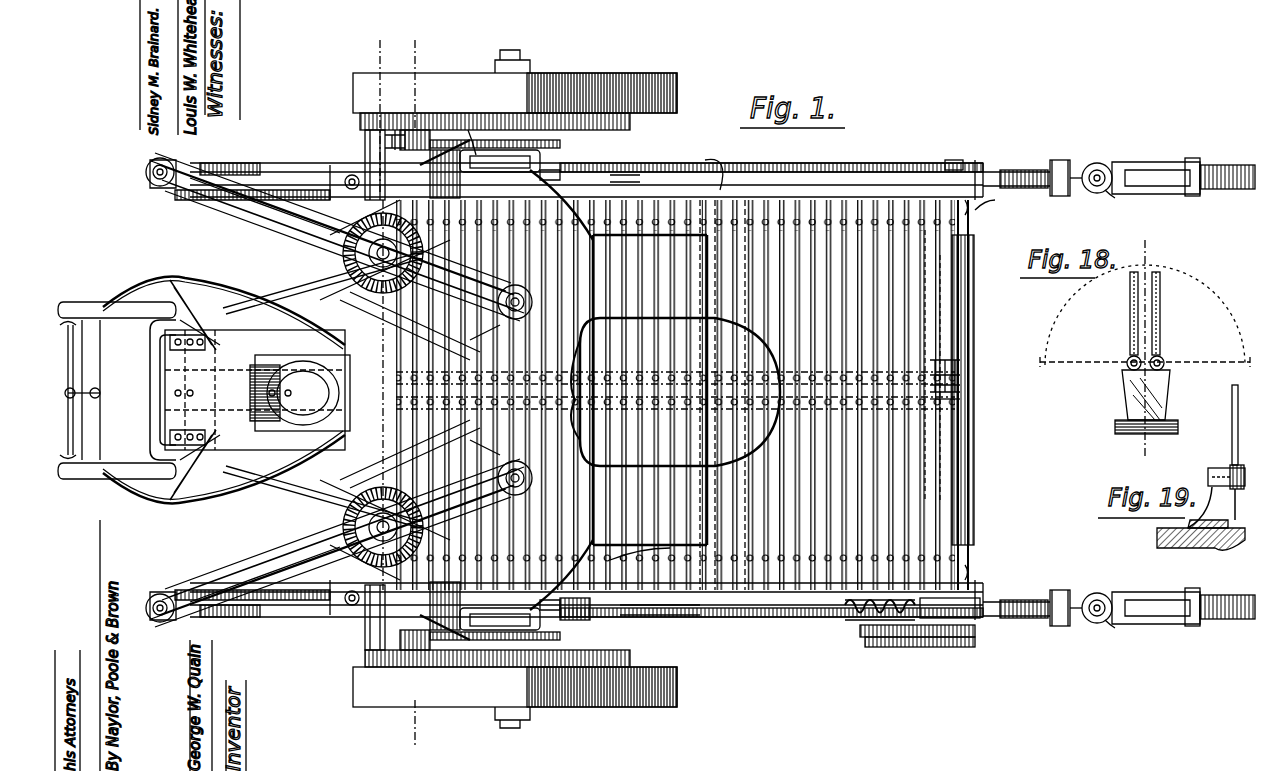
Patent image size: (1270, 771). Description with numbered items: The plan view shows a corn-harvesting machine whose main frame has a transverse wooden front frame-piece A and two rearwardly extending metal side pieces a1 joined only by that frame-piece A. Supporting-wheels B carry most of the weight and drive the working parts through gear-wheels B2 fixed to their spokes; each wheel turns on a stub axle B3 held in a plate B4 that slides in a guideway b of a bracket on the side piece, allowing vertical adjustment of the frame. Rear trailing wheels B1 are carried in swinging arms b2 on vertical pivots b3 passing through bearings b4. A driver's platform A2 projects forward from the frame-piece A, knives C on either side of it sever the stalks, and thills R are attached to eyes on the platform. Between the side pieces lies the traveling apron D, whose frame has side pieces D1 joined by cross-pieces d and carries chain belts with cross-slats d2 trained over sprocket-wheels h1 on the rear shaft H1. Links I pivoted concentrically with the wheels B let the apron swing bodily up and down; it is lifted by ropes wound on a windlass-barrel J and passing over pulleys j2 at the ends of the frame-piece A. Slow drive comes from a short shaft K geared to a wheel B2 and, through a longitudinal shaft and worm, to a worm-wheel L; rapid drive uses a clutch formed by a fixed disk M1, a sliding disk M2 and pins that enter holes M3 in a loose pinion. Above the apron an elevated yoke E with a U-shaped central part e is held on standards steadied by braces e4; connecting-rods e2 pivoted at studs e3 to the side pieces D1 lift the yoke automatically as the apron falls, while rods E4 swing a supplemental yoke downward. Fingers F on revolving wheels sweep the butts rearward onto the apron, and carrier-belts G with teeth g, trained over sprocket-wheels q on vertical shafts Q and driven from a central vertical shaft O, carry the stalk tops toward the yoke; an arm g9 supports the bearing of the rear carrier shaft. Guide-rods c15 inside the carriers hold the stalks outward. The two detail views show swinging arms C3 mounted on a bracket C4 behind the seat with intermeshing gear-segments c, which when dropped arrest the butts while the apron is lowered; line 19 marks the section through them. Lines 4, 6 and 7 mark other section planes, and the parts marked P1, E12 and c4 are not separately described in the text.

In FIG. 1, the supporting-wheel B is at (515, 390).
In FIG. 1, the trailing wheel B1 is at (1190, 160).
In FIG. 1, the gear-wheel B2 is at (620, 150).
In FIG. 1, the stub axle B3 is at (520, 52).
In FIG. 1, the plate B4 is at (515, 389).
In FIG. 1, the guideway b is at (487, 121).
In FIG. 1, the swinging arm b2 is at (1132, 166).
In FIG. 1, the vertical pivot b3 is at (1100, 165).
In FIG. 1, the bearing b4 is at (1100, 418).
In FIG. 1, the transverse frame-piece A is at (257, 390).
In FIG. 18, the transverse frame-piece A is at (1178, 428).
In FIG. 19, the transverse frame-piece A is at (1157, 540).
In FIG. 1, the driver's platform A2 is at (828, 158).
In FIG. 1, the side piece of apron-frame D1 is at (868, 180).
In FIG. 1, the traveling platform or apron D is at (738, 395).
In FIG. 1, the cross-piece d is at (860, 222).
In FIG. 1, the cross-slat d2 is at (930, 300).
In FIG. 1, the central U-shaped part of yoke e is at (778, 390).
In FIG. 1, the connecting-rod e2 is at (995, 207).
In FIG. 1, the pivot-stud e3 is at (888, 390).
In FIG. 1, the brace e4 is at (709, 167).
In FIG. 1, the yoke E is at (618, 390).
In FIG. 1, the rod E4 is at (675, 393).
In FIG. 1, the pipe fitting E12 is at (633, 164).
In FIG. 1, the rear apron shaft H1 is at (984, 366).
In FIG. 1, the sprocket-wheel h1 is at (962, 235).
In FIG. 1, the side piece a1 is at (1030, 393).
In FIG. 1, the forward link I is at (1008, 170).
In FIG. 1, the carrier-belt G is at (148, 170).
In FIG. 1, the finger or tooth g is at (319, 398).
In FIG. 1, the arm g9 is at (511, 387).
In FIG. 1, the sprocket-wheel q is at (224, 391).
In FIG. 1, the forward carrier shaft Q is at (345, 390).
In FIG. 1, the vertical shaft O is at (346, 378).
In FIG. 1, the pulley j2 is at (321, 383).
In FIG. 1, the knife or cutter C is at (276, 395).
In FIG. 1, the gear-segment c is at (201, 409).
In FIG. 18, the gear-segment c is at (1126, 360).
In FIG. 19, the gear-segment c is at (1228, 472).
In FIG. 1, the guide-rod c15 is at (224, 387).
In FIG. 1, the pipe clamp c4 is at (677, 539).
In FIG. 1, the finger F is at (412, 390).
In FIG. 1, the windlass-barrel J is at (214, 421).
In FIG. 1, the thill R is at (145, 412).
In FIG. 1, the short shaft K is at (385, 632).
In FIG. 1, the worm-wheel L is at (937, 623).
In FIG. 1, the post P1 is at (365, 113).
In FIG. 1, the fixed disk M1 is at (404, 119).
In FIG. 1, the sliding disk M2 is at (445, 384).
In FIG. 1, the hole M3 is at (385, 140).
In FIG. 1, the section line 4 is at (379, 114).
In FIG. 1, the section line 6 is at (414, 82).
In FIG. 1, the section line 7 is at (415, 722).
In FIG. 18, the section line 19 is at (1149, 351).
In FIG. 18, the swinging arm C3 is at (1130, 312).
In FIG. 19, the swinging arm C3 is at (1232, 407).
In FIG. 18, the bracket C4 is at (1135, 392).
In FIG. 19, the bracket C4 is at (1235, 512).